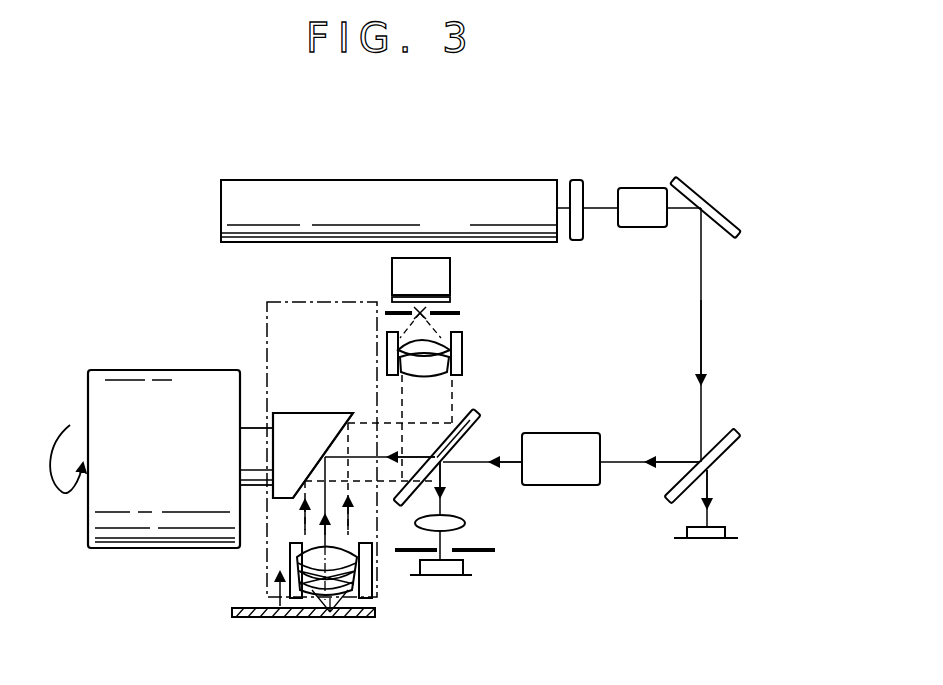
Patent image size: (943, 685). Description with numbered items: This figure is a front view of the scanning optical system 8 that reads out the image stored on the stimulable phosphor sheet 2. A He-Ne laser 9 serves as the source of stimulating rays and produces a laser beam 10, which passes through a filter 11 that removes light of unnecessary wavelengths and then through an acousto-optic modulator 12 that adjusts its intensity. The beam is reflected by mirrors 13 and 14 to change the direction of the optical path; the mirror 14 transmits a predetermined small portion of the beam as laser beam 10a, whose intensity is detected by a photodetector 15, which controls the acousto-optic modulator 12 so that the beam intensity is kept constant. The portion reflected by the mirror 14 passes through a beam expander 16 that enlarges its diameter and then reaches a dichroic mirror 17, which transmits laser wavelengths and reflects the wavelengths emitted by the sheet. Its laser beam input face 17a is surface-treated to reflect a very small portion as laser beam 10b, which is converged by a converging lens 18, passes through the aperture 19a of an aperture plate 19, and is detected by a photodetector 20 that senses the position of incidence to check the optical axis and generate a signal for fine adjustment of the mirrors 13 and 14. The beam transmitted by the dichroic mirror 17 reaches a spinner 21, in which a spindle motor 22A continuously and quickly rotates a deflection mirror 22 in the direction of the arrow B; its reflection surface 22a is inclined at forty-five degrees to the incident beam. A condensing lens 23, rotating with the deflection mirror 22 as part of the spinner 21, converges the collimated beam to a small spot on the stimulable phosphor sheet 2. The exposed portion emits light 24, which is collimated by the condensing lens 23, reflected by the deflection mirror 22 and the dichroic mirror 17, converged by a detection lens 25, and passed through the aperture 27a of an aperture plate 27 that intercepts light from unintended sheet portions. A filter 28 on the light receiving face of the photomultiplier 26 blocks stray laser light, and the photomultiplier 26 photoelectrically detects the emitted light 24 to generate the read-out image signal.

The stimulable phosphor sheet 2 is at (290, 618).
The scanning optical system 8 is at (188, 240).
The He-Ne laser 9 is at (398, 192).
The laser beam 10 is at (597, 208).
The laser beam passing through mirror 14 10a is at (710, 496).
The laser beam reflected by input face 17a 10b is at (448, 481).
The filter 11 is at (577, 180).
The acousto-optic modulator 12 is at (650, 188).
The mirror 13 is at (728, 216).
The mirror 14 is at (733, 441).
The photodetector 15 is at (710, 538).
The beam expander 16 is at (587, 433).
The dichroic mirror 17 is at (471, 416).
The laser beam input face 17a is at (478, 433).
The converging lens 18 is at (463, 523).
The aperture plate 19 is at (483, 550).
The aperture 19a is at (452, 553).
The photodetector 20 is at (448, 576).
The spinner 21 is at (206, 352).
The deflection mirror 22 is at (295, 420).
The reflection surface 22a is at (357, 417).
The spindle motor 22A is at (167, 530).
The condensing lens 23 is at (366, 568).
The emitted light 24 is at (338, 620).
The detection lens 25 is at (464, 343).
The photomultiplier 26 is at (395, 258).
The aperture plate 27 is at (467, 313).
The aperture 27a is at (401, 311).
The filter 28 is at (450, 299).
The arrow B is at (59, 459).